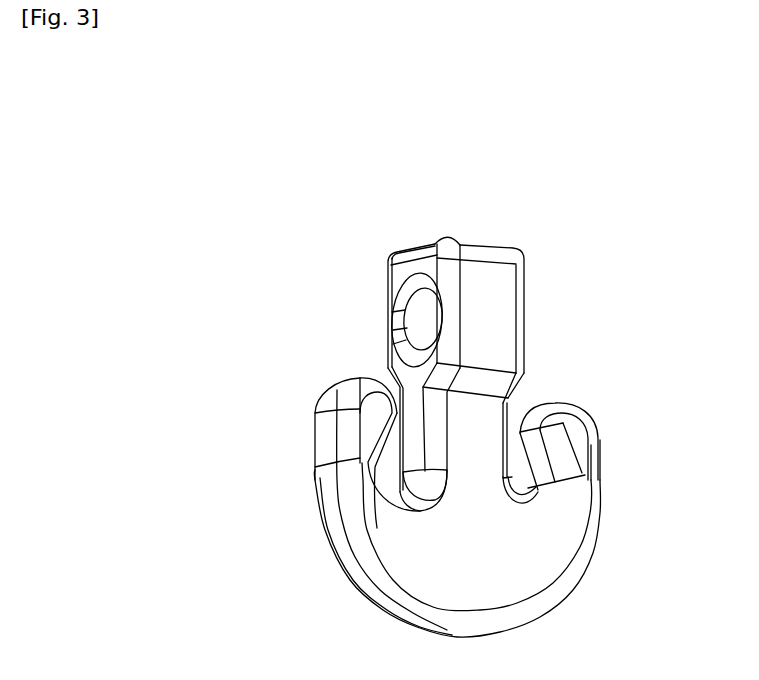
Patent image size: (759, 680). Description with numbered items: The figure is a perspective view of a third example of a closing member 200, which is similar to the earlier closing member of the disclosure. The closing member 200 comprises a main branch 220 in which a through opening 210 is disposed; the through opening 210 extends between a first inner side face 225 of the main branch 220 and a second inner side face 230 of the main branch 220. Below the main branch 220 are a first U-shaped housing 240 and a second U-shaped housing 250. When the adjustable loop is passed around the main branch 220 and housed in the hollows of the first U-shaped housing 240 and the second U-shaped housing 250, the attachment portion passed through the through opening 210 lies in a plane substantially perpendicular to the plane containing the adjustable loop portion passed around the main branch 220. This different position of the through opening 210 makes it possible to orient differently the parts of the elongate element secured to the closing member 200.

The closing member 200 is at (673, 127).
The through opening 210 is at (397, 332).
The main branch 220 is at (503, 298).
The first inner side face 225 is at (402, 268).
The second inner side face 230 is at (523, 255).
The first U-shaped housing 240 is at (400, 500).
The second U-shaped housing 250 is at (528, 490).